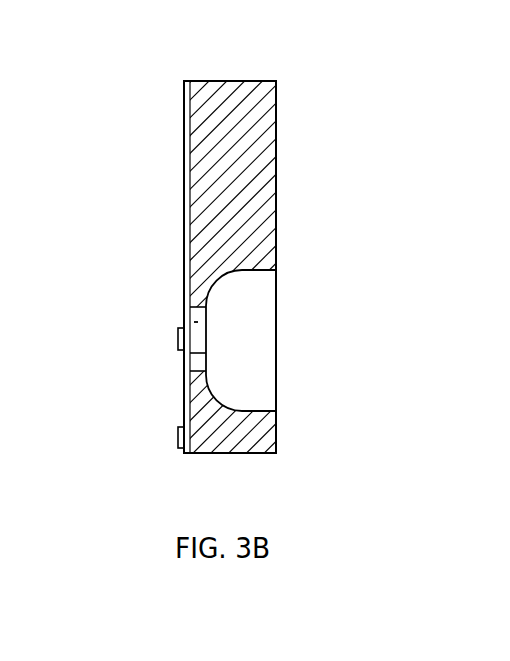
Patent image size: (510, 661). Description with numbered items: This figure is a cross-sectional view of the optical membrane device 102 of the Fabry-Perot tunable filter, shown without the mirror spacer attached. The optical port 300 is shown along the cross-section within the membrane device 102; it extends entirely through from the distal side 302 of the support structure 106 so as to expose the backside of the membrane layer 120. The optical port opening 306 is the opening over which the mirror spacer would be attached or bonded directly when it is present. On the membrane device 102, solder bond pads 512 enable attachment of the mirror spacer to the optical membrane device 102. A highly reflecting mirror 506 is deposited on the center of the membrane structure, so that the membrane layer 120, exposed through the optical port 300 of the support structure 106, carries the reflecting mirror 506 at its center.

The optical membrane device 102 is at (232, 72).
The support structure 106 is at (262, 152).
The solder bond pads 512 is at (179, 169).
The distal side 302 is at (285, 236).
The optical port 300 is at (247, 333).
The optical port opening 306 is at (196, 322).
The membrane layer 120 is at (206, 353).
The highly reflecting mirror 506 is at (178, 340).